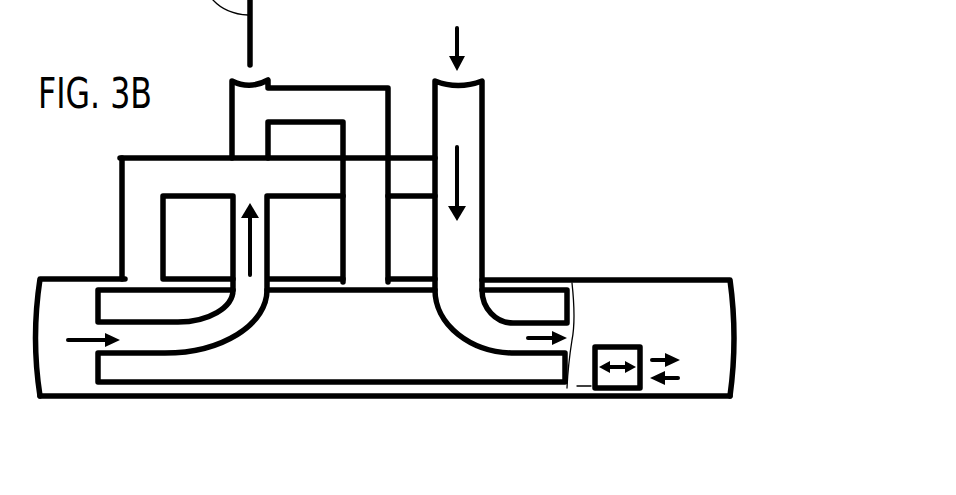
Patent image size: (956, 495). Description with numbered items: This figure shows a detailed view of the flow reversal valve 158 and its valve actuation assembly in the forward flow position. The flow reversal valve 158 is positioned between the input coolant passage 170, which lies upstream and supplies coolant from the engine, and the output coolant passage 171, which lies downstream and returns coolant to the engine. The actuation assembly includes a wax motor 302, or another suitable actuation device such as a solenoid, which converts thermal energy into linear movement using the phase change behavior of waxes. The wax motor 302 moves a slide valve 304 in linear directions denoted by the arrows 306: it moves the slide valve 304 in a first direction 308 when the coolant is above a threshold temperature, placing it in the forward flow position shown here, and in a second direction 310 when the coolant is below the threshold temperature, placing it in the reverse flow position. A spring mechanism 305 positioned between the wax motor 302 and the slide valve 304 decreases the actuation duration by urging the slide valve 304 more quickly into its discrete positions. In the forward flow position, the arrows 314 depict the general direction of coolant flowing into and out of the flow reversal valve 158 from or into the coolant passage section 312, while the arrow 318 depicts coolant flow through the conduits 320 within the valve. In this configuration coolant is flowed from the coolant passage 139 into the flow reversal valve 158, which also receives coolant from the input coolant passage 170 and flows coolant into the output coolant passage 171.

The coolant passage 139 is at (460, 39).
The flow reversal valve 158 is at (631, 197).
The input coolant passage 170 is at (58, 302).
The output coolant passage 171 is at (698, 320).
The wax motor 302 is at (620, 345).
The slide valve 304 is at (575, 333).
The spring mechanism 305 is at (579, 387).
The arrows 306 is at (620, 372).
The first direction 308 is at (658, 354).
The second direction 310 is at (667, 384).
The coolant passage section 312 is at (653, 423).
The arrows 314 is at (85, 336).
The arrow 318 is at (247, 250).
The conduits 320 is at (293, 237).